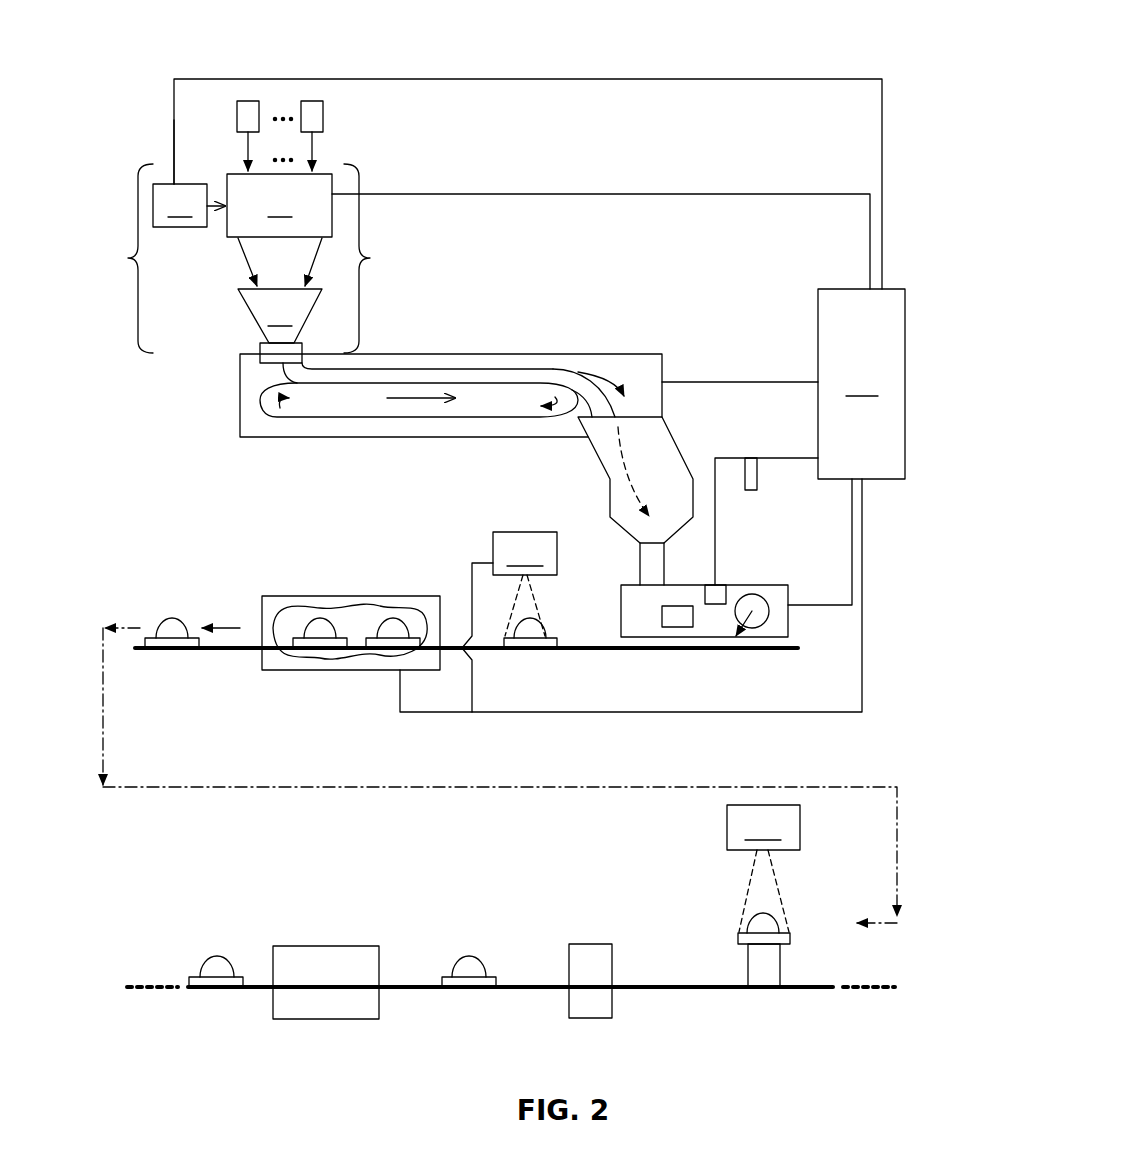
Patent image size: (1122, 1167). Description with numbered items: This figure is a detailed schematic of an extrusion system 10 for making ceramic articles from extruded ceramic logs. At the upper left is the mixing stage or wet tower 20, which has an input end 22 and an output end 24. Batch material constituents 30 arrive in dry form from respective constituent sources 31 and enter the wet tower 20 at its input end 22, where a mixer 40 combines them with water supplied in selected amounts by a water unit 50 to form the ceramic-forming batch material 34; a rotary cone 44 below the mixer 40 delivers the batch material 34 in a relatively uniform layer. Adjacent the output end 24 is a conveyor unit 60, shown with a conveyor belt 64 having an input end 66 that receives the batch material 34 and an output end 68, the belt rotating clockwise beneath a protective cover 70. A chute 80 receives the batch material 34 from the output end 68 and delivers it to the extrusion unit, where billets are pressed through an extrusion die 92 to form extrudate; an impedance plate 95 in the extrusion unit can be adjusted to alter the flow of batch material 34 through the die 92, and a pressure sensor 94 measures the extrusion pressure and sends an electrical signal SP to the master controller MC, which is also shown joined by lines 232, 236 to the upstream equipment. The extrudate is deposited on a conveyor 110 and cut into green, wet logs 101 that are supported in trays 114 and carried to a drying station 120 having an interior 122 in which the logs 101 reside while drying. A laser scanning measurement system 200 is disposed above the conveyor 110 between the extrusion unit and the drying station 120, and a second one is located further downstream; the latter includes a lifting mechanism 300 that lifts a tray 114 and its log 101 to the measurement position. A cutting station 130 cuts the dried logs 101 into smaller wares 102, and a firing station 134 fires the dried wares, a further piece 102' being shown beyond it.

The extrusion system 10 is at (776, 58).
The wet tower 20 is at (128, 259).
The input end 22 is at (197, 148).
The output end 24 is at (202, 355).
The batch material constituents 30 is at (331, 153).
The constituent sources 31 is at (331, 115).
The batch material 34 is at (258, 270).
The mixer 40 is at (279, 205).
The rotary cone 44 is at (280, 316).
The water unit 50 is at (189, 205).
The conveyor unit 60 is at (266, 455).
The conveyor belt 64 is at (426, 419).
The input end 66 is at (263, 396).
The output end 68 is at (562, 410).
The protective cover 70 is at (240, 387).
The chute 80 is at (699, 447).
The extrusion die 92 is at (752, 612).
The pressure sensor 94 is at (722, 585).
The impedance plate 95 is at (682, 627).
The logs 101 is at (172, 617).
The wares 102 is at (448, 950).
The finished pellet 102' is at (190, 951).
The conveyor 110 is at (622, 648).
The trays 114 is at (383, 650).
The drying station 120 is at (290, 596).
The interior 122 is at (353, 625).
The cutting station 130 is at (583, 944).
The firing station 134 is at (317, 946).
The laser scanning measurement system 200 is at (662, 705).
The control line 232 is at (740, 346).
The control line 236 is at (601, 226).
The lifting mechanism 300 is at (747, 962).
The electrical signal SP is at (757, 480).
The master controller MC is at (861, 384).